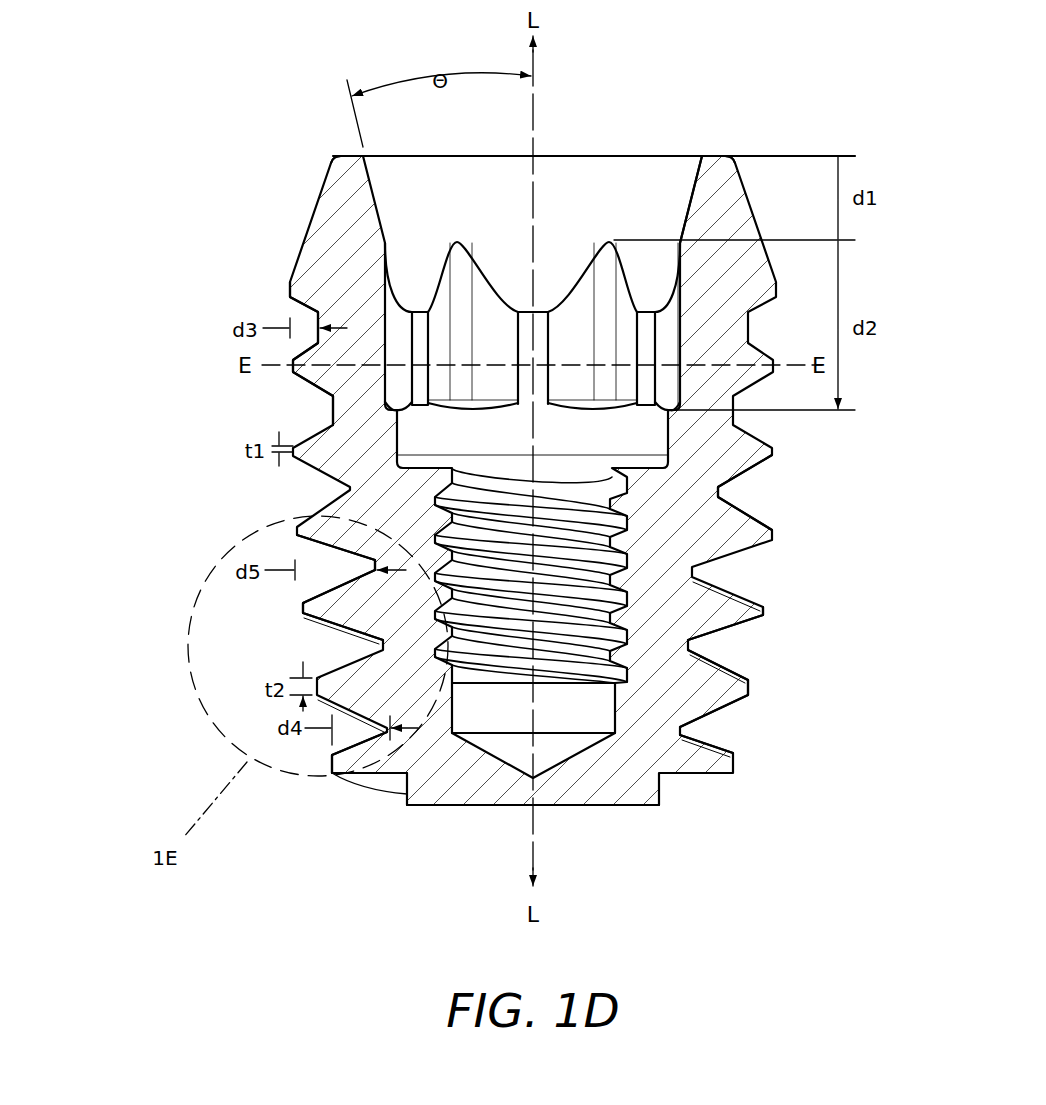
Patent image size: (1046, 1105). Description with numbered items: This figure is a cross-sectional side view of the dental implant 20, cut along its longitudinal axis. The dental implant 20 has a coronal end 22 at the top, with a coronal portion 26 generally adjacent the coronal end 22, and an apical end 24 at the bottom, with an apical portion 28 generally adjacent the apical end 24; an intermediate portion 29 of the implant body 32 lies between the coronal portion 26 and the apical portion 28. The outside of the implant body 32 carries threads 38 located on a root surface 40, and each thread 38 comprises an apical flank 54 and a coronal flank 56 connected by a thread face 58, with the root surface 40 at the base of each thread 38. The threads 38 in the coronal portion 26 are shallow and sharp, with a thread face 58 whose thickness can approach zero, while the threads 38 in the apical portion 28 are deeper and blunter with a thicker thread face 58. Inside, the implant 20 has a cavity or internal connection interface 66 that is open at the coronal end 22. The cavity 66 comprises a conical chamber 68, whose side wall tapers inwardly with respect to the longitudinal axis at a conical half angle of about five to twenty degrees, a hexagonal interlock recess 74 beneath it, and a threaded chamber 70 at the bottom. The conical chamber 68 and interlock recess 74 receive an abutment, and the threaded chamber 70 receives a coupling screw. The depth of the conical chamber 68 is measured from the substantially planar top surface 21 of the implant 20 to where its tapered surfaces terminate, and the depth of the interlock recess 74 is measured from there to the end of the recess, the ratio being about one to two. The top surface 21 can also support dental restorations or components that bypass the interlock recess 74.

The dental implant 20 is at (215, 226).
The top surface 21 is at (337, 153).
The coronal end 22 is at (614, 156).
The apical end 24 is at (622, 808).
The coronal portion 26 is at (218, 408).
The apical portion 28 is at (200, 757).
The intermediate portion 29 is at (185, 603).
The implant body 32 is at (200, 575).
The threads 38 is at (773, 692).
The root surface 40 is at (720, 490).
The apical flank 54 is at (730, 703).
The coronal flank 56 is at (730, 665).
The thread face 58 is at (748, 683).
The cavity or internal connection interface 66 is at (468, 208).
The conical chamber 68 is at (689, 197).
The threaded chamber 70 is at (590, 598).
The hexagonal interlock recess 74 is at (398, 388).